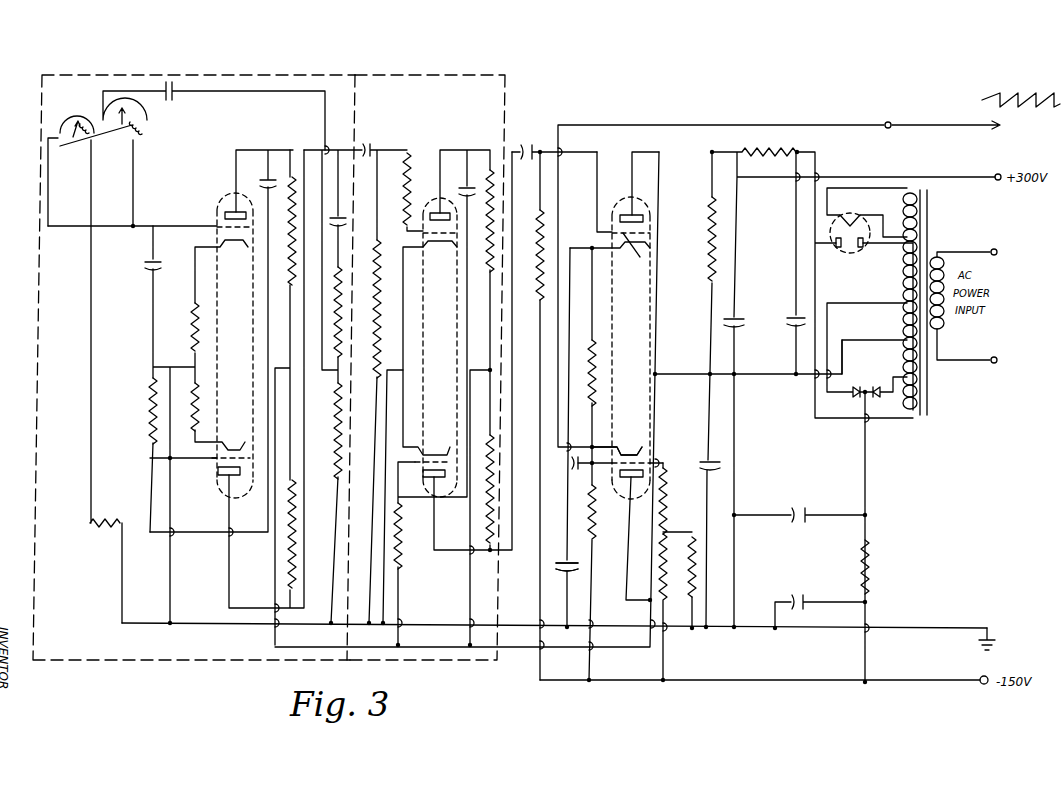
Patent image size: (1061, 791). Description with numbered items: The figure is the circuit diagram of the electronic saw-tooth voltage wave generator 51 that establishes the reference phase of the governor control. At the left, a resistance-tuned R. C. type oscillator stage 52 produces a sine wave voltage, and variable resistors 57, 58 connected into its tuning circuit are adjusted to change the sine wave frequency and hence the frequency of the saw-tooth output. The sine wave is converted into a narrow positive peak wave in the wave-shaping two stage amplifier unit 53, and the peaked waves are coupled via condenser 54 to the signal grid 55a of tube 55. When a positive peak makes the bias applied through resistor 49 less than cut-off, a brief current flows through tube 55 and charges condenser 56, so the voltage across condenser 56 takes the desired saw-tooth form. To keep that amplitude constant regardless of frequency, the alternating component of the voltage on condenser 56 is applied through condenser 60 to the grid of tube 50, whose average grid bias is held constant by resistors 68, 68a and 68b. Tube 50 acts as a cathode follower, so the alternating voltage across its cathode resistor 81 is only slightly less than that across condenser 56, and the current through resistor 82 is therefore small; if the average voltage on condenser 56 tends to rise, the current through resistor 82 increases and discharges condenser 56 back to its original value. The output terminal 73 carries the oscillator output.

The resistor 49 is at (540, 226).
The tube 50 is at (630, 494).
The saw-tooth voltage wave generator 51 is at (351, 66).
The oscillator stage 52 is at (213, 68).
The wave-shaping two stage amplifier unit 53 is at (465, 75).
The condenser 54 is at (533, 146).
The tube 55 is at (630, 204).
The signal grid 55a is at (628, 254).
The condenser 56 is at (562, 560).
The variable resistor 57 is at (75, 119).
The variable resistor 58 is at (141, 106).
The condenser 60 is at (104, 134).
The resistor 68 is at (676, 571).
The resistor 68a is at (662, 573).
The resistor 68b is at (671, 491).
The oscillator output terminal 73 is at (922, 129).
The cathode resistor 81 is at (594, 522).
The resistor 82 is at (592, 354).